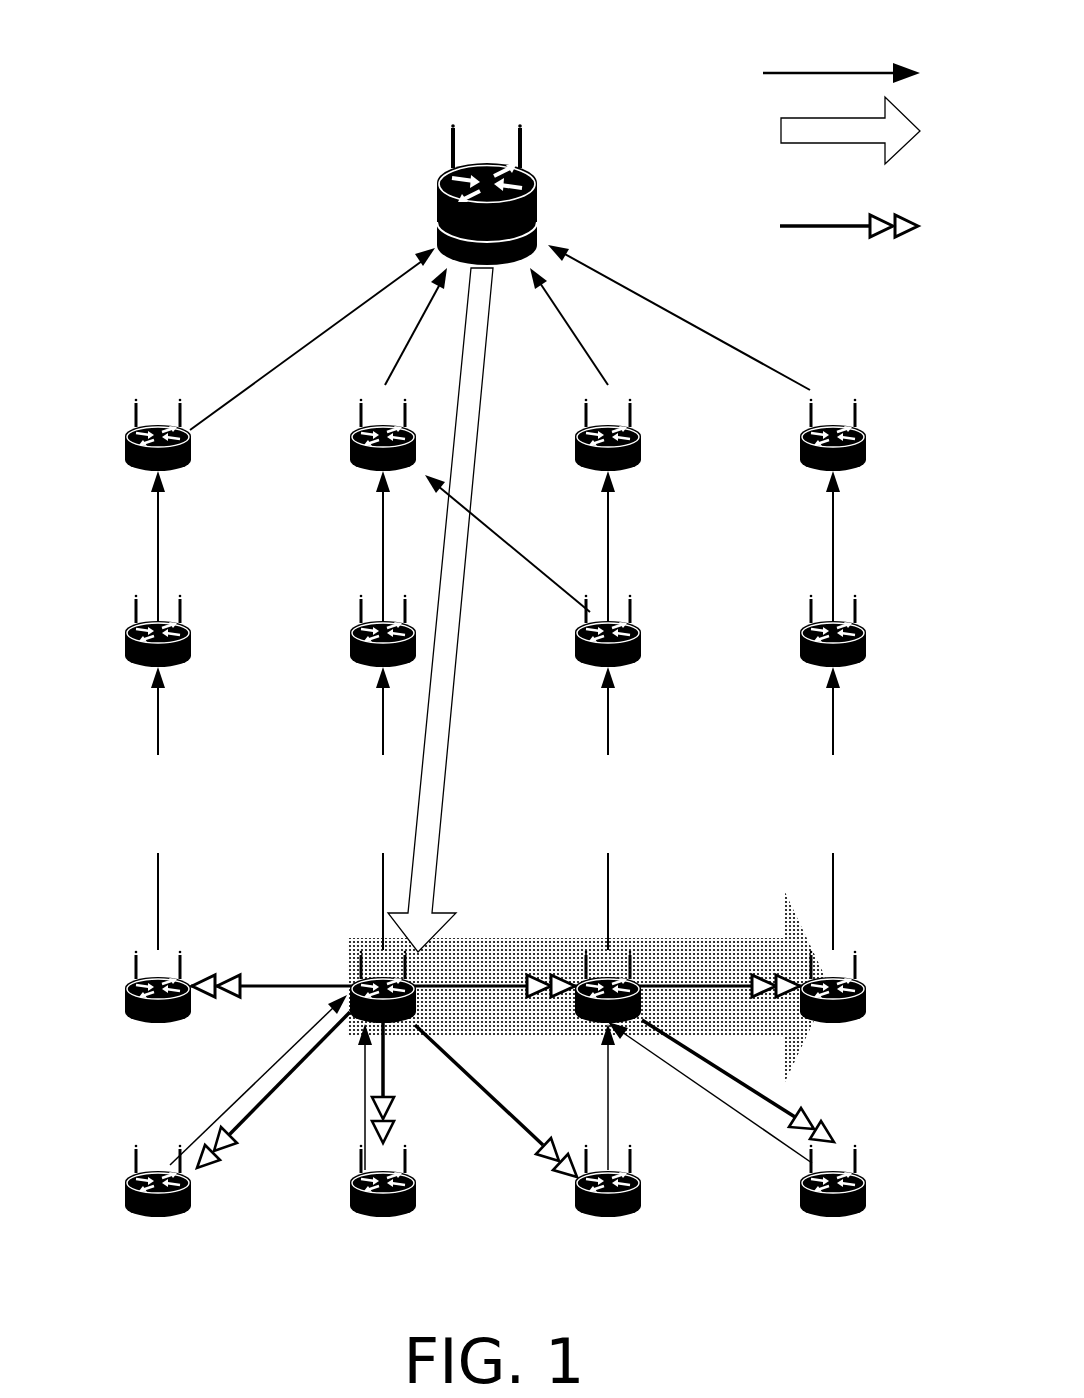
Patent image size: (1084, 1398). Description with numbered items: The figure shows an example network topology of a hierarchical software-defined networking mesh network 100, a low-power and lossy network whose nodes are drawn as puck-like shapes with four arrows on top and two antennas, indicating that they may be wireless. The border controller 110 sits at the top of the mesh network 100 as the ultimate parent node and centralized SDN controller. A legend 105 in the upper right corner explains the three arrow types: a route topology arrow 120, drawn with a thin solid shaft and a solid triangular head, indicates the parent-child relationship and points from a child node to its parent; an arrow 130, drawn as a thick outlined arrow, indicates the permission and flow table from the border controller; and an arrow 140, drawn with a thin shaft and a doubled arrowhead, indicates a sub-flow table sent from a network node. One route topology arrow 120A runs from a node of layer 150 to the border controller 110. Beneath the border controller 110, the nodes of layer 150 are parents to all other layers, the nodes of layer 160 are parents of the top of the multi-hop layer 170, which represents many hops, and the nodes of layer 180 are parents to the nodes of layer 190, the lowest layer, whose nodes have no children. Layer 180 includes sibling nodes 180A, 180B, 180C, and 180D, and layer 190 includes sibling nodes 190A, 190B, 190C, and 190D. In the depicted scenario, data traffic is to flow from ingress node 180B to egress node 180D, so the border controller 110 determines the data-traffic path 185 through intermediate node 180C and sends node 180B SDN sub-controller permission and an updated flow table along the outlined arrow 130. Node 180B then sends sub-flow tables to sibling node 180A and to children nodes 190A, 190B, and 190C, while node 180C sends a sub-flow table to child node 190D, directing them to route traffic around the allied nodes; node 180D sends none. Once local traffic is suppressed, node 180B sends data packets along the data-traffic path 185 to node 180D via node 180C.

The hierarchical SDN mesh network 100 is at (170, 98).
The legend 105 is at (532, 63).
The border controller 110 is at (437, 178).
The route topology arrow 120 is at (800, 70).
The route topology arrow 120A is at (312, 332).
The permission and flow table arrow 130 is at (781, 118).
The sub-flow table arrow 140 is at (815, 225).
The layer of nodes 150 is at (897, 446).
The layer of nodes 160 is at (897, 637).
The multi-hop layer 170 is at (880, 810).
The layer of nodes 180 is at (903, 996).
The node 180A is at (160, 1020).
The node 180B is at (368, 982).
The node 180C is at (603, 980).
The node 180D is at (850, 1018).
The data-traffic path 185 is at (748, 937).
The layer of nodes 190 is at (893, 1191).
The node 190A is at (160, 1212).
The node 190B is at (385, 1212).
The node 190C is at (610, 1212).
The node 190D is at (835, 1212).